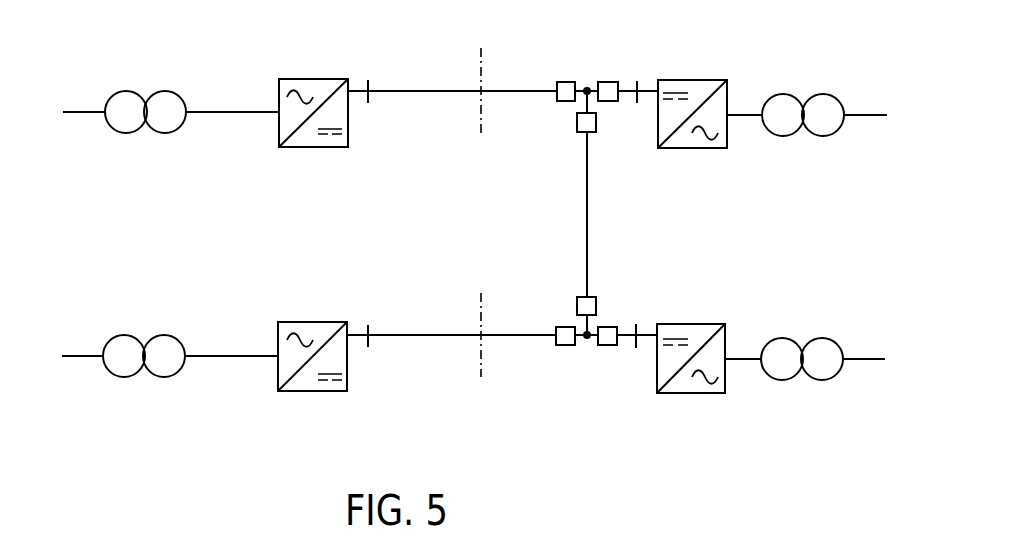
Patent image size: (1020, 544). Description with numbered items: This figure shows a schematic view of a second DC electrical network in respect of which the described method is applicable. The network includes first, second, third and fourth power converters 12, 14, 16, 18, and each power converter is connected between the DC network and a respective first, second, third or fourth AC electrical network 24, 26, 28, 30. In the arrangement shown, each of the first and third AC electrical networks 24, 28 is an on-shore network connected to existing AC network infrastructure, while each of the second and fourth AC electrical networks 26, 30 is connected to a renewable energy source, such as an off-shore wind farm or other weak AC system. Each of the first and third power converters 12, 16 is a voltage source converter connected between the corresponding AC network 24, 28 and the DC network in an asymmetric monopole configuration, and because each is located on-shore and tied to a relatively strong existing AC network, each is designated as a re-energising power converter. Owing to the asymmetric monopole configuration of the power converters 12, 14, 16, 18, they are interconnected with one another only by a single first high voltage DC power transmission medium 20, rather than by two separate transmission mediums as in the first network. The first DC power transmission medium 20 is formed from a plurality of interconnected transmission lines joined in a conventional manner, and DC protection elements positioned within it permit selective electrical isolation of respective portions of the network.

The first power converter 12 is at (315, 85).
The second power converter 14 is at (700, 90).
The third power converter 16 is at (311, 384).
The fourth power converter 18 is at (680, 393).
The first DC power transmission medium 20 is at (515, 90).
The first AC electrical network 24 is at (123, 135).
The second AC electrical network 26 is at (822, 137).
The third AC electrical network 28 is at (122, 377).
The fourth AC electrical network 30 is at (820, 382).